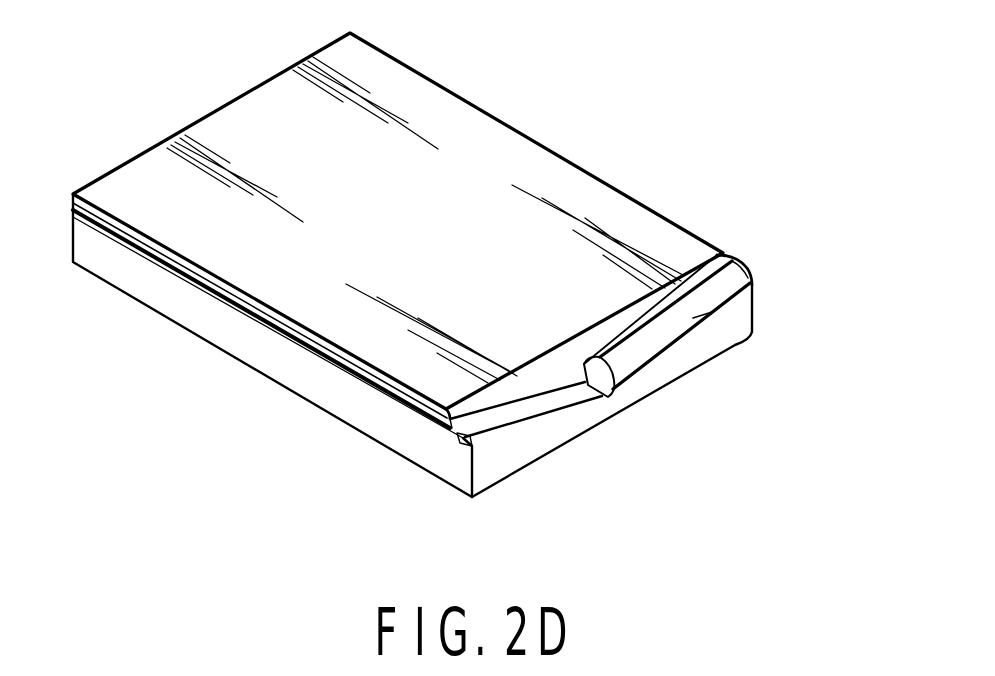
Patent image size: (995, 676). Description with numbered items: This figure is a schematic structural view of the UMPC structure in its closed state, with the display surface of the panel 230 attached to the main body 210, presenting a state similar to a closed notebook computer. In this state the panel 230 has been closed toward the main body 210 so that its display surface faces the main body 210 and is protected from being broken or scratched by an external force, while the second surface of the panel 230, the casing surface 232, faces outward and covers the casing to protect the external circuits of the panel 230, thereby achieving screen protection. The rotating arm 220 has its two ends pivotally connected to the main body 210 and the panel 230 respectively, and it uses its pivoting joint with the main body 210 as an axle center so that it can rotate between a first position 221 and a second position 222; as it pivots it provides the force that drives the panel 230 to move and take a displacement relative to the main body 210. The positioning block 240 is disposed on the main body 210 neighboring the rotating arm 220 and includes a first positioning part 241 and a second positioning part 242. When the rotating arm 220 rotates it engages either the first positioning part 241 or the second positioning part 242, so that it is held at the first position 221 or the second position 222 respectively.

The main body 210 is at (143, 280).
The rotating arm 220 is at (615, 360).
The first position 221 is at (757, 272).
The second position 222 is at (445, 445).
The panel 230 is at (522, 127).
The casing surface 232 is at (227, 133).
The positioning block 240 is at (459, 379).
The first positioning part 241 is at (745, 345).
The second positioning part 242 is at (487, 470).